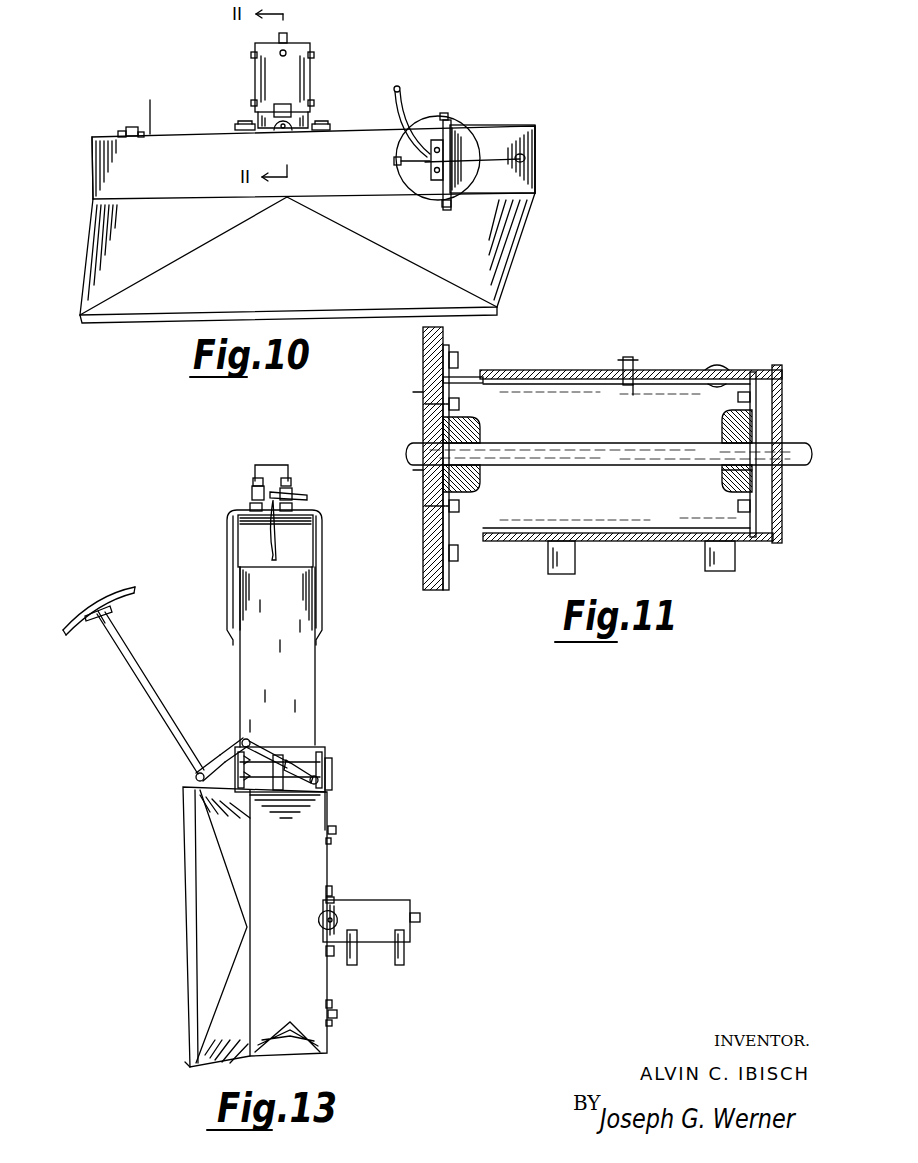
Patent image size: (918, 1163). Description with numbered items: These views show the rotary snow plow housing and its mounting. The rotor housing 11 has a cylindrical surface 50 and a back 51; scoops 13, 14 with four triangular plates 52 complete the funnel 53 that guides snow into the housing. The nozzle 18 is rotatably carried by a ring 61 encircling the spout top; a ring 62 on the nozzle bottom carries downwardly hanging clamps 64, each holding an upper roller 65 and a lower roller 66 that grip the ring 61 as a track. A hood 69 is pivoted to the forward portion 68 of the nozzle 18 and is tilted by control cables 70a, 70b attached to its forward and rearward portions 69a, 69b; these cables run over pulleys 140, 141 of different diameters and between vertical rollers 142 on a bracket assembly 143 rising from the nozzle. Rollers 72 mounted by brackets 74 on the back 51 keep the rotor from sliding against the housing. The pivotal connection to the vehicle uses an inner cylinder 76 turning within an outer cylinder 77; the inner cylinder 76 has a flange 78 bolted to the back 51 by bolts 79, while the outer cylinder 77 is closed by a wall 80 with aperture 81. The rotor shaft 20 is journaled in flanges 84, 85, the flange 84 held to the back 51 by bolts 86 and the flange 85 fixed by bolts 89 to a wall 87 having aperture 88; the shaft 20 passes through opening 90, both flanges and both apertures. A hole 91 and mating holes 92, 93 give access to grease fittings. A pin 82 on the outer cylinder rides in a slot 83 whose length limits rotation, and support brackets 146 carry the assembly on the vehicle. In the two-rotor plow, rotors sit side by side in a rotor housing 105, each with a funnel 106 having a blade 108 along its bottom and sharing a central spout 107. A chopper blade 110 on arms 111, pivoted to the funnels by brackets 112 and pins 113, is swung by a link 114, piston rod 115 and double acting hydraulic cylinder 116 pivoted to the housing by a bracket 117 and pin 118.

In FIG. 10, the rotor housing 11 is at (92, 185).
In FIG. 10, the scoop 13 is at (125, 280).
In FIG. 10, the scoop 14 is at (435, 268).
In FIG. 13, the nozzle 18 is at (316, 690).
In FIG. 10, the rotor shaft 20 is at (287, 33).
In FIG. 11, the rotor shaft 20 is at (804, 446).
In FIG. 13, the rotor shaft 20 is at (418, 913).
In FIG. 10, the cylindrical surface 50 is at (92, 160).
In FIG. 10, the back 51 is at (151, 108).
In FIG. 11, the back 51 is at (444, 336).
In FIG. 10, the triangular plate 52 is at (192, 315).
In FIG. 10, the funnel 53 is at (160, 270).
In FIG. 13, the ring 61 is at (296, 792).
In FIG. 10, the ring 62 is at (468, 124).
In FIG. 13, the ring 62 is at (325, 752).
In FIG. 10, the clamp 64 is at (445, 112).
In FIG. 13, the clamp 64 is at (358, 765).
In FIG. 13, the upper roller 65 is at (245, 740).
In FIG. 13, the lower roller 66 is at (279, 790).
In FIG. 13, the forward portion of the nozzle 68 is at (238, 590).
In FIG. 10, the hood 69 is at (509, 125).
In FIG. 13, the hood 69 is at (322, 545).
In FIG. 10, the forward portion of the hood 69a is at (538, 171).
In FIG. 10, the rearward portion of the hood 69b is at (412, 135).
In FIG. 10, the control cable 70a is at (525, 155).
In FIG. 13, the control cable 70a is at (250, 506).
In FIG. 13, the control cable 70b is at (293, 509).
In FIG. 10, the roller 72 is at (130, 127).
In FIG. 13, the roller 72 is at (337, 830).
In FIG. 10, the bracket 74 is at (118, 133).
In FIG. 13, the bracket 74 is at (333, 1026).
In FIG. 10, the inner cylinder 76 is at (258, 118).
In FIG. 11, the inner cylinder 76 is at (567, 384).
In FIG. 13, the inner cylinder 76 is at (336, 902).
In FIG. 11, the outer cylinder 77 is at (660, 370).
In FIG. 11, the flange 78 is at (449, 348).
In FIG. 13, the flange 78 is at (330, 886).
In FIG. 10, the bolt 79 is at (235, 127).
In FIG. 11, the bolt 79 is at (458, 358).
In FIG. 13, the bolt 79 is at (334, 897).
In FIG. 10, the wall 80 is at (265, 43).
In FIG. 11, the wall 80 is at (783, 393).
In FIG. 11, the aperture 81 is at (770, 438).
In FIG. 11, the pin 82 is at (630, 357).
In FIG. 11, the slot 83 is at (625, 384).
In FIG. 11, the flange 84 is at (481, 432).
In FIG. 11, the flange 85 is at (722, 480).
In FIG. 11, the bolt 86 is at (460, 405).
In FIG. 11, the wall 87 is at (757, 380).
In FIG. 11, the aperture 88 is at (782, 478).
In FIG. 11, the bolt 89 is at (738, 398).
In FIG. 11, the opening 90 is at (424, 484).
In FIG. 11, the hole 91 is at (463, 377).
In FIG. 11, the hole 92 is at (718, 366).
In FIG. 11, the hole 93 is at (708, 380).
In FIG. 13, the rotor housing 105 is at (332, 841).
In FIG. 13, the funnel 106 is at (200, 897).
In FIG. 13, the spout 107 is at (327, 797).
In FIG. 13, the blade 108 is at (190, 1068).
In FIG. 13, the chopper blade 110 is at (110, 600).
In FIG. 13, the arm 111 is at (135, 676).
In FIG. 13, the bracket 112 is at (195, 775).
In FIG. 13, the pin 113 is at (196, 779).
In FIG. 13, the link 114 is at (220, 755).
In FIG. 13, the piston rod 115 is at (252, 745).
In FIG. 13, the double acting hydraulic cylinder 116 is at (283, 765).
In FIG. 13, the bracket 117 is at (330, 790).
In FIG. 13, the pin 118 is at (346, 775).
In FIG. 13, the pulley 140 is at (252, 490).
In FIG. 13, the pulley 141 is at (300, 492).
In FIG. 13, the vertical roller 142 is at (255, 479).
In FIG. 10, the bracket assembly 143 is at (449, 125).
In FIG. 13, the bracket assembly 143 is at (283, 465).
In FIG. 10, the support bracket 146 is at (251, 56).
In FIG. 11, the support bracket 146 is at (705, 558).
In FIG. 13, the support bracket 146 is at (357, 963).